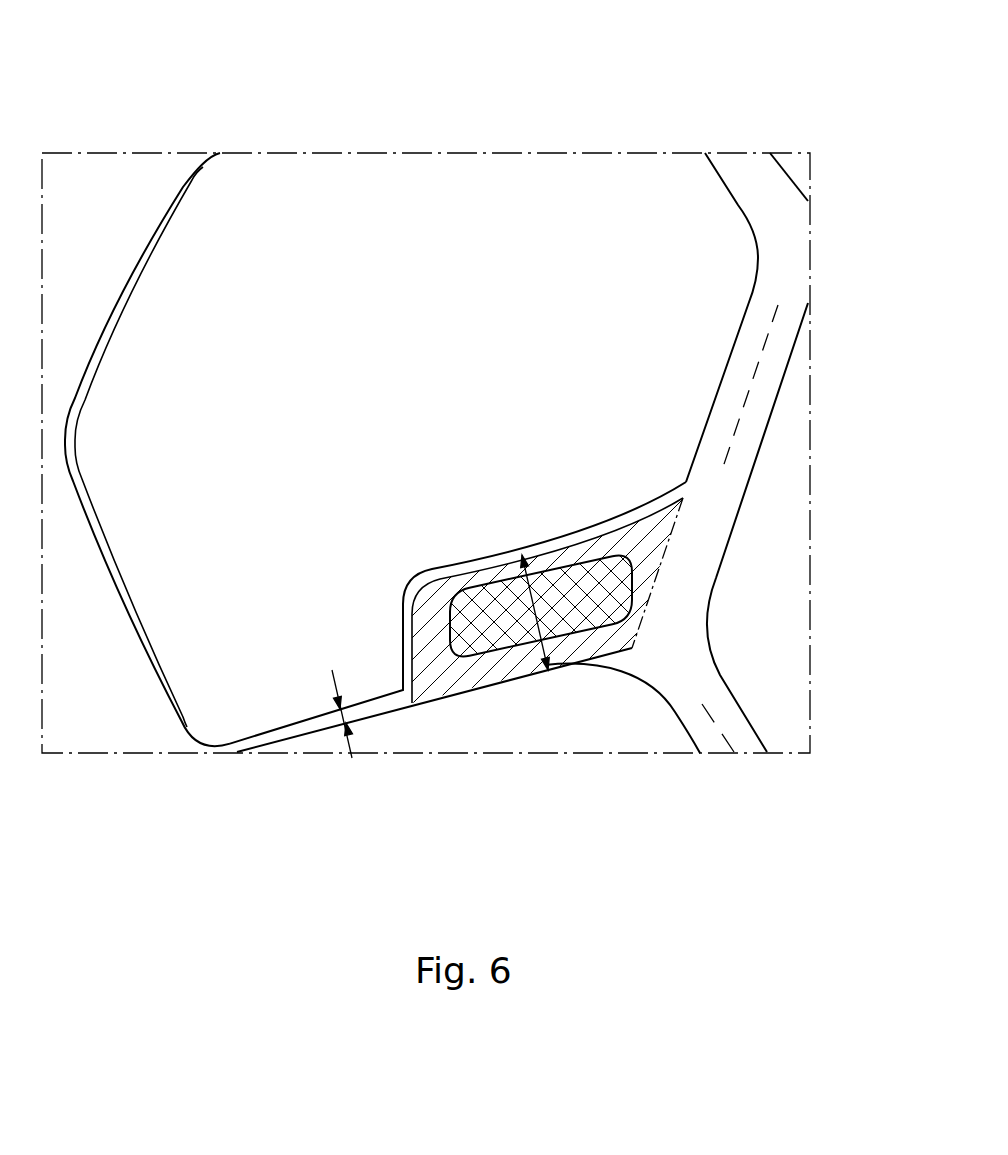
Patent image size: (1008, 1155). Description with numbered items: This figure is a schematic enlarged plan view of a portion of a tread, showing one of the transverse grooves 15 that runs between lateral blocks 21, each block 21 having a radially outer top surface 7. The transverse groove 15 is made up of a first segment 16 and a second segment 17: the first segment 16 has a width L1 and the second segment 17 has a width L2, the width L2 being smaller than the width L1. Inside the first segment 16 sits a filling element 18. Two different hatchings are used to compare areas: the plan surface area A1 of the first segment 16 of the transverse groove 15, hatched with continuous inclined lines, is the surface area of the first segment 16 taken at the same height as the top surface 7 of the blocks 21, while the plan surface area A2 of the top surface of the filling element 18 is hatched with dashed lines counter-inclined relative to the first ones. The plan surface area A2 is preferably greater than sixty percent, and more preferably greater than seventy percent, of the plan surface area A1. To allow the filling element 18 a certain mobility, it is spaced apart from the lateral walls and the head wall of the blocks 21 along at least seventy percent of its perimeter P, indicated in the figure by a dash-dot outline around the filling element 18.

The lateral blocks 21 is at (512, 223).
The radially outer top surface 7 is at (437, 388).
The transverse groove 15 is at (395, 711).
The first segment 16 is at (660, 522).
The second segment 17 is at (281, 746).
The filling element 18 is at (488, 647).
The plan surface area of the first segment A1 is at (660, 550).
The plan surface area of the top surface of the filling element A2 is at (593, 623).
The perimeter P is at (653, 580).
The width of the first segment L1 is at (574, 637).
The width of the second segment L2 is at (322, 722).